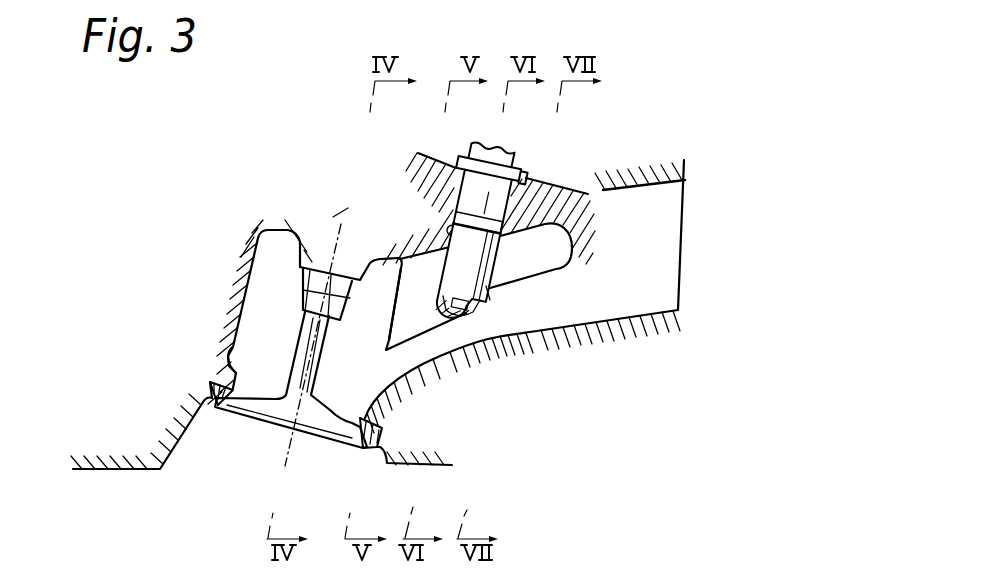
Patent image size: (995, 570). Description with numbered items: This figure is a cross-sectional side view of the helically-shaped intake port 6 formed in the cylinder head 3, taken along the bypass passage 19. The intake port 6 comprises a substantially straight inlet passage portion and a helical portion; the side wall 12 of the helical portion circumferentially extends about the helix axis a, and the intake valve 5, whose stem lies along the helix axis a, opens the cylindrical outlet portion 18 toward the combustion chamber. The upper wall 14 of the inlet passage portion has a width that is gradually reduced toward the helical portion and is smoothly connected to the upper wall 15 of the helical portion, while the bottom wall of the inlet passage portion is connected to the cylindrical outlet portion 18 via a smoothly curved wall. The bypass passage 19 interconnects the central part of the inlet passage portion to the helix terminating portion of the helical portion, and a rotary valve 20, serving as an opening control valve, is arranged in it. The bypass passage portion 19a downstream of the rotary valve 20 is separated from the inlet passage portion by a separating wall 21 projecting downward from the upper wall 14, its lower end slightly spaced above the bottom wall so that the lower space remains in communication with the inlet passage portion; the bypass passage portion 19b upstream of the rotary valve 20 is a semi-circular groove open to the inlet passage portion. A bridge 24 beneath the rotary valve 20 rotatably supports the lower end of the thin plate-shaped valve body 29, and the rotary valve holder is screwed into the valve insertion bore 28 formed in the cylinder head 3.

The cylinder head 3 is at (143, 460).
The intake valve 5 is at (250, 410).
The helically-shaped intake port 6 is at (643, 303).
The side wall of the helical portion 12 is at (246, 288).
The upper wall of the inlet passage portion 14 is at (646, 188).
The upper wall of the helical portion 15 is at (272, 228).
The cylindrical outlet portion 18 is at (232, 370).
The bypass passage 19 is at (421, 292).
The bypass passage portion downstream of the rotary valve 19a is at (410, 250).
The bypass passage portion upstream of the rotary valve 19b is at (537, 262).
The rotary valve 20 is at (603, 147).
The separating wall 21 is at (393, 332).
The bridge 24 is at (464, 318).
The valve insertion bore 28 is at (452, 230).
The valve body 29 is at (488, 293).
The helix axis a is at (333, 222).